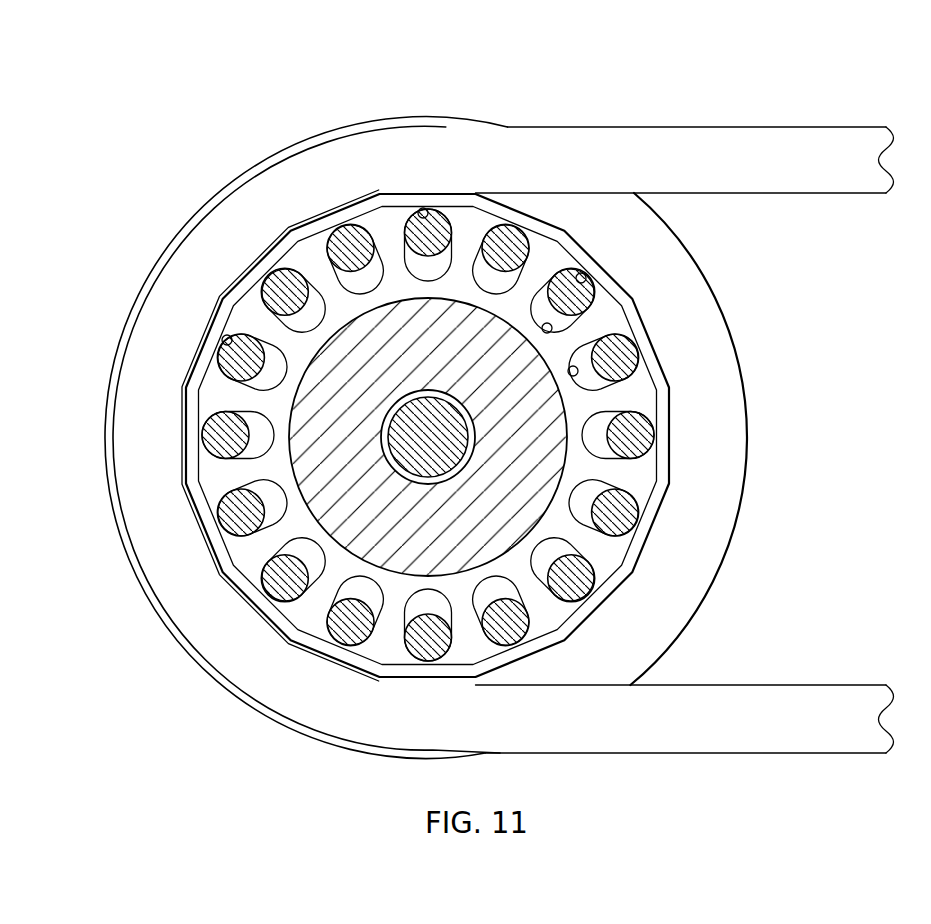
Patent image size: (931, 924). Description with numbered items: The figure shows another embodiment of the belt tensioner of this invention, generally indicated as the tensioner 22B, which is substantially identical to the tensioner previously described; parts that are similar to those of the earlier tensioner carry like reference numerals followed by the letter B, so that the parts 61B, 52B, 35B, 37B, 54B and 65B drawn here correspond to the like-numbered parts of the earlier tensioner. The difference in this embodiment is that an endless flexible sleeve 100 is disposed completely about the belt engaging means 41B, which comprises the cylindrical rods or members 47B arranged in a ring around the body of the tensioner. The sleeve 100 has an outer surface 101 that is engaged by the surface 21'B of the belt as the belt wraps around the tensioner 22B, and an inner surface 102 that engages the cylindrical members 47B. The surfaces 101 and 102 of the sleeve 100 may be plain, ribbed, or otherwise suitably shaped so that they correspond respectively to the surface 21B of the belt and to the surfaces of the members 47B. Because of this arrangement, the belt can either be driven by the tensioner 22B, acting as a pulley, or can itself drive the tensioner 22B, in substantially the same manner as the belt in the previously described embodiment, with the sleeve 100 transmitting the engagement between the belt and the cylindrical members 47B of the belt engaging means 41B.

The tensioner 22B is at (776, 64).
The surface of the belt 21B is at (796, 143).
The surface of the belt 21'B is at (685, 474).
The outer surface of the sleeve 101 is at (497, 200).
The endless flexible sleeve 100 is at (247, 293).
The cylindrical rods or members 47B is at (351, 236).
The pins 61B is at (423, 208).
The belt engaging means 41B is at (602, 352).
The pins 52B is at (226, 336).
The inner drum surface 35B is at (733, 334).
The outer drum 37B is at (737, 410).
The hub 54B is at (290, 372).
The central shaft 65B is at (568, 364).
The inner surface of the sleeve 102 is at (647, 394).